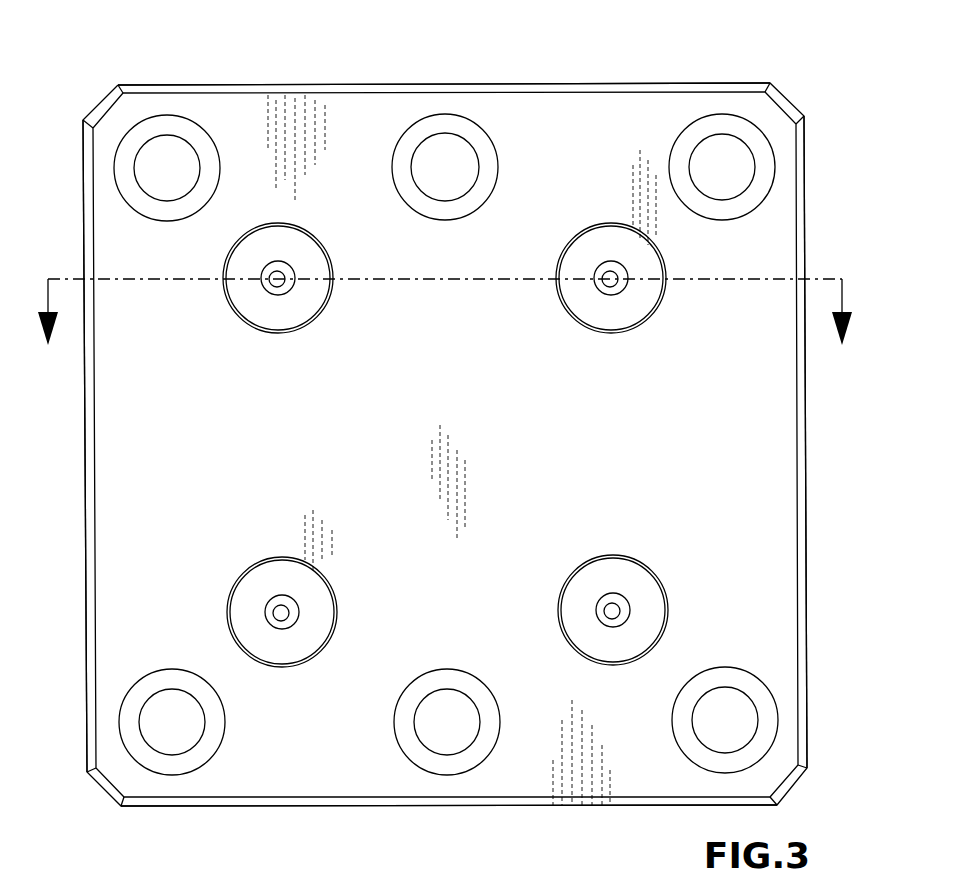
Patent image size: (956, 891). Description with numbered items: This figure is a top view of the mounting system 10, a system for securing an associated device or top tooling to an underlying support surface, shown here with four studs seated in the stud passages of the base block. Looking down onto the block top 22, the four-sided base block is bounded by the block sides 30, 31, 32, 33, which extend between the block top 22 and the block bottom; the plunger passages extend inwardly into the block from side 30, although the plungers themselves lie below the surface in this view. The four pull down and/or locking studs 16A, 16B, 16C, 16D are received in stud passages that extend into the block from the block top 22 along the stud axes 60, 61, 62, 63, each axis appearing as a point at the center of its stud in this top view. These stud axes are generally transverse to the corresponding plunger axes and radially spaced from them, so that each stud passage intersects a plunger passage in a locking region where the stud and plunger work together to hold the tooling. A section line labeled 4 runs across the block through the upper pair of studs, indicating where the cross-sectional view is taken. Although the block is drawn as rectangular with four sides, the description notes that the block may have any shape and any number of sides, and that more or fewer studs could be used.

The fixture plate assembly 10 is at (447, 444).
The block top 22 is at (753, 508).
The block side 30 is at (577, 806).
The block side 31 is at (87, 563).
The block side 32 is at (442, 85).
The block side 33 is at (800, 562).
The stud 16A is at (278, 288).
The stud 16B is at (611, 288).
The stud 16C is at (282, 622).
The stud 16D is at (613, 619).
The stud axis 60 is at (610, 599).
The stud axis 61 is at (278, 601).
The stud axis 62 is at (274, 268).
The stud axis 63 is at (607, 268).
The section line 4- 4 is at (445, 337).